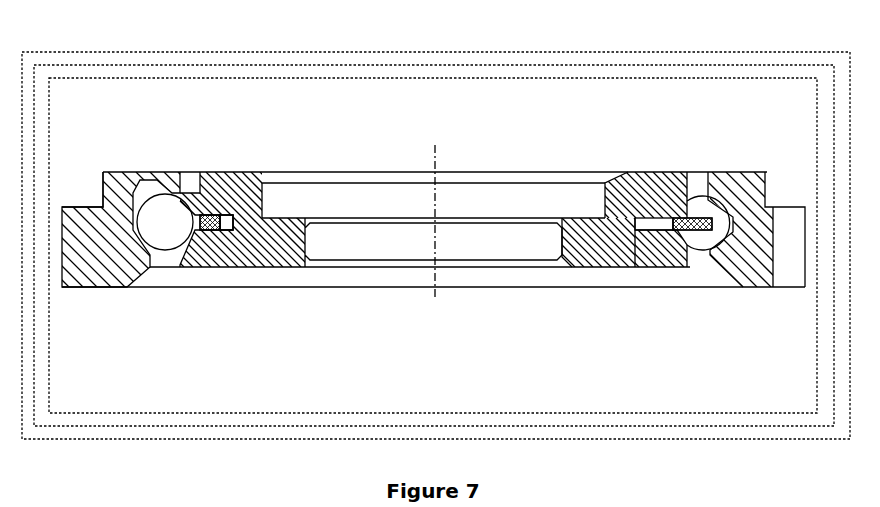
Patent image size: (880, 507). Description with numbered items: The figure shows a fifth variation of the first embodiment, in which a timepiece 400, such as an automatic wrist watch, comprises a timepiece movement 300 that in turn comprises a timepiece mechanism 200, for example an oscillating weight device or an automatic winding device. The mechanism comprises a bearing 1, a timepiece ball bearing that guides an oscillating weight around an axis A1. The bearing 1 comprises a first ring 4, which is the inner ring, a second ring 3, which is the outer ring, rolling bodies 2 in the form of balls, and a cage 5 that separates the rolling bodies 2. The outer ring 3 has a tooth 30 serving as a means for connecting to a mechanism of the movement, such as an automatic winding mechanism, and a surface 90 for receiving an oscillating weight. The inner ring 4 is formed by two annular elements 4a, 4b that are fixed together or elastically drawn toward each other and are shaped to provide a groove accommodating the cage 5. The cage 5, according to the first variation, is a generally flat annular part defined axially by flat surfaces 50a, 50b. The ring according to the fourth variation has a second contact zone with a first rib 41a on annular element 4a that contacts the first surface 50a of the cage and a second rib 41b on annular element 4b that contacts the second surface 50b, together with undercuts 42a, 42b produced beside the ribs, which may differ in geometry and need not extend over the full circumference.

The bearing 1 is at (405, 150).
The axis A1 is at (436, 167).
The rolling bodies 2 is at (165, 220).
The second ring 3 is at (83, 278).
The surface for receiving an oscillating weight 90 is at (83, 206).
The first ring 4 is at (654, 171).
The annular element 4a is at (611, 250).
The annular element 4b is at (660, 248).
The first rib 41a is at (208, 214).
The second rib 41b is at (207, 231).
The undercut 42a is at (229, 213).
The undercut 42b is at (233, 232).
The cage 5 is at (683, 218).
The first surface 50a is at (703, 217).
The second surface 50b is at (703, 231).
The tooth 30 is at (787, 206).
The timepiece mechanism 200 is at (628, 77).
The timepiece movement 300 is at (679, 64).
The timepiece 400 is at (727, 51).